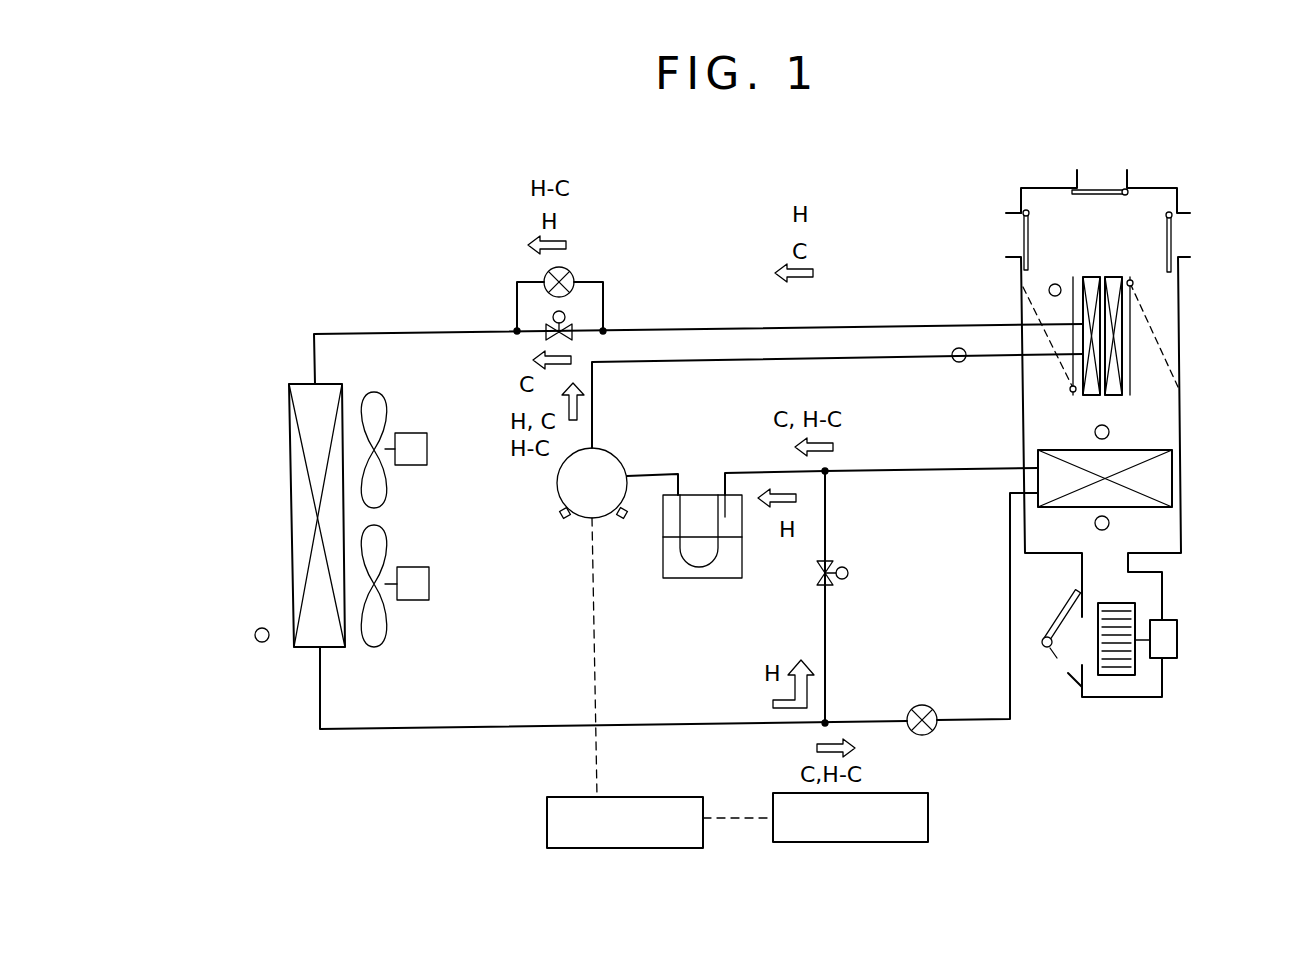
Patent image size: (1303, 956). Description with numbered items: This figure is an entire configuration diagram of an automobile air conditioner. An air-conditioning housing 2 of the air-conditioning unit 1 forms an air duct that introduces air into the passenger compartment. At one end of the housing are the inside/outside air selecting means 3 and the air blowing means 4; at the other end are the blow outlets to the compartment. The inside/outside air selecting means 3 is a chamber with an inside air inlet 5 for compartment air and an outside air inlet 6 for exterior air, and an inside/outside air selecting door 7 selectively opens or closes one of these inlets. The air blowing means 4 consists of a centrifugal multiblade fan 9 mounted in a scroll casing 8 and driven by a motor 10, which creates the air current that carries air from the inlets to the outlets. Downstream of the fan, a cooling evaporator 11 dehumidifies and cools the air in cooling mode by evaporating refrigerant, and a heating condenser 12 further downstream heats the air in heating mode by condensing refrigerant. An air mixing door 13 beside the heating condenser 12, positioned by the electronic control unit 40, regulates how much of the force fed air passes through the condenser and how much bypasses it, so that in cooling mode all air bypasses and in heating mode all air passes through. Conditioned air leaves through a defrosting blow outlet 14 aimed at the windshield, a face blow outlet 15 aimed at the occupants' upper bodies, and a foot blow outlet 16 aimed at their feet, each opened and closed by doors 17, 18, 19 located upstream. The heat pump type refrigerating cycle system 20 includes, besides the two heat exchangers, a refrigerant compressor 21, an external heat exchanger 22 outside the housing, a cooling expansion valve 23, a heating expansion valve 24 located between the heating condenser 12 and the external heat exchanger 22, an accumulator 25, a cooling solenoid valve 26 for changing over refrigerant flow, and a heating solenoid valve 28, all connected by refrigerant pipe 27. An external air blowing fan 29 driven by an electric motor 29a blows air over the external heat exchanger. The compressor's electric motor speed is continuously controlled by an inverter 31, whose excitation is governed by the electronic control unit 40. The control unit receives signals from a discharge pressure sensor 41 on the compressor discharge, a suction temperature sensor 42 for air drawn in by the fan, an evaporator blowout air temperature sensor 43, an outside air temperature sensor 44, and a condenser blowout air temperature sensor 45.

The air-conditioning unit 1 is at (1187, 488).
The air-conditioning housing 2 is at (1180, 398).
The inside/outside air selecting means 3 is at (1047, 657).
The air blowing means 4 is at (1145, 663).
The inside air inlet 5 is at (1063, 665).
The outside air inlet 6 is at (1058, 602).
The inside/outside air selecting door 7 is at (1057, 615).
The scroll casing 8 is at (1163, 697).
The centrifugal multiblade fan 9 is at (1135, 608).
The motor 10 is at (1172, 642).
The cooling evaporator 11 is at (1153, 468).
The heating condenser 12 is at (1113, 292).
The air mixing door 13 is at (1073, 320).
The defrosting blow outlet 14 is at (1010, 230).
The face blow outlet 15 is at (1087, 180).
The foot blow outlet 16 is at (1183, 232).
The door 17 is at (1025, 245).
The door 18 is at (1100, 180).
The door 19 is at (1173, 247).
The refrigerating cycle system 20 is at (698, 316).
The refrigerant compressor 21 is at (615, 450).
The external heat exchanger 22 is at (289, 497).
The cooling expansion valve 23 is at (928, 707).
The heating expansion valve 24 is at (572, 270).
The accumulator 25 is at (702, 575).
The cooling solenoid valve 26 is at (573, 323).
The refrigerant pipe 27 is at (733, 328).
The heating solenoid valve 28 is at (850, 573).
The external air blowing fan 29 is at (385, 393).
The electric motor 29a is at (427, 452).
The inverter 31 is at (547, 822).
The electronic control unit 40 is at (928, 815).
The discharge pressure sensor 41 is at (952, 365).
The suction temperature sensor 42 is at (1110, 523).
The evaporator blowout air temperature sensor 43 is at (1093, 432).
The outside air temperature sensor 44 is at (262, 642).
The condenser blowout air temperature sensor 45 is at (1048, 290).